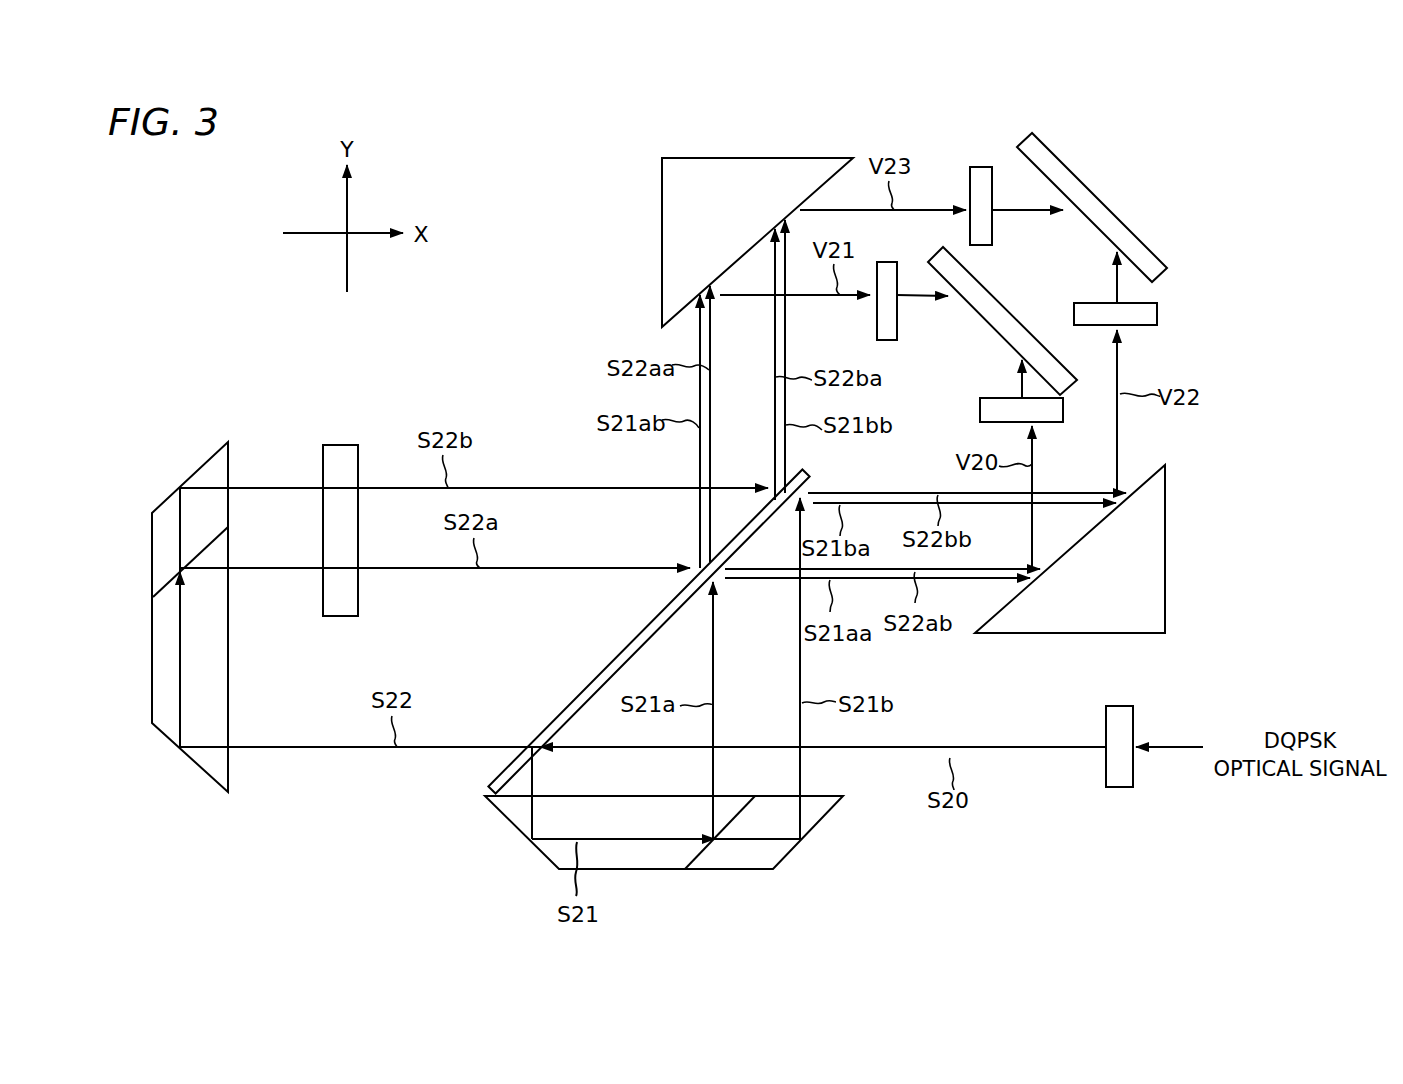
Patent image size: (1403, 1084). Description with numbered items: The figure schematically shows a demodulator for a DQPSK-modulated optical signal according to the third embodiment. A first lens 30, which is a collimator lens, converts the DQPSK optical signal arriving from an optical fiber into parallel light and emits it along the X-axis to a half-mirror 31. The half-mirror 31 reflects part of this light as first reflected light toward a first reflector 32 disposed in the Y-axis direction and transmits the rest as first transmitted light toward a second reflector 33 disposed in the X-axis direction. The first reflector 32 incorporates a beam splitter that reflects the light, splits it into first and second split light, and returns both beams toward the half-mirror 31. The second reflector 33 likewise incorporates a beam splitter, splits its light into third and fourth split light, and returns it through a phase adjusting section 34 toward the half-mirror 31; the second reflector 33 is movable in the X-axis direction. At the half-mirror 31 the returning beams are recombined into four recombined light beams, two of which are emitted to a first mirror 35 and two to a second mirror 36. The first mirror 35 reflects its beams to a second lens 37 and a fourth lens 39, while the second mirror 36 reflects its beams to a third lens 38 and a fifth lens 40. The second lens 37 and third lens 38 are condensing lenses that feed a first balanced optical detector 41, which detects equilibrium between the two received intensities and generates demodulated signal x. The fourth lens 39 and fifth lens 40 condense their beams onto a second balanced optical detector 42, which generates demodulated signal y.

The first lens 30 is at (1119, 788).
The half-mirror 31 is at (583, 678).
The first reflector 32 is at (640, 870).
The second reflector 33 is at (151, 540).
The phase adjusting section 34 is at (345, 445).
The first mirror 35 is at (1166, 577).
The second mirror 36 is at (753, 158).
The second lens 37 is at (980, 406).
The third lens 38 is at (898, 328).
The fourth lens 39 is at (1158, 315).
The fifth lens 40 is at (984, 167).
The first balanced optical detector 41 is at (1000, 298).
The second balanced optical detector 42 is at (1110, 205).